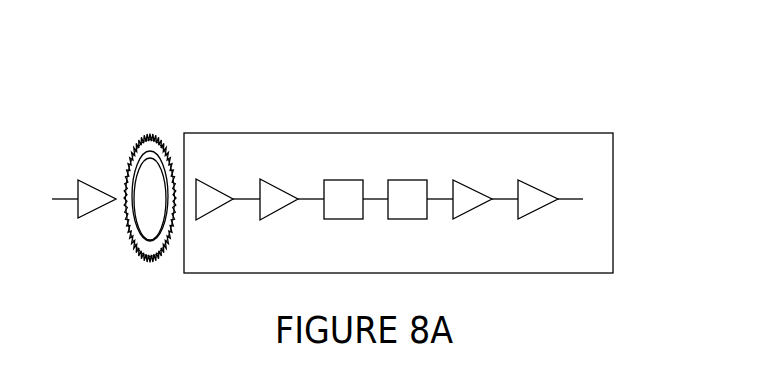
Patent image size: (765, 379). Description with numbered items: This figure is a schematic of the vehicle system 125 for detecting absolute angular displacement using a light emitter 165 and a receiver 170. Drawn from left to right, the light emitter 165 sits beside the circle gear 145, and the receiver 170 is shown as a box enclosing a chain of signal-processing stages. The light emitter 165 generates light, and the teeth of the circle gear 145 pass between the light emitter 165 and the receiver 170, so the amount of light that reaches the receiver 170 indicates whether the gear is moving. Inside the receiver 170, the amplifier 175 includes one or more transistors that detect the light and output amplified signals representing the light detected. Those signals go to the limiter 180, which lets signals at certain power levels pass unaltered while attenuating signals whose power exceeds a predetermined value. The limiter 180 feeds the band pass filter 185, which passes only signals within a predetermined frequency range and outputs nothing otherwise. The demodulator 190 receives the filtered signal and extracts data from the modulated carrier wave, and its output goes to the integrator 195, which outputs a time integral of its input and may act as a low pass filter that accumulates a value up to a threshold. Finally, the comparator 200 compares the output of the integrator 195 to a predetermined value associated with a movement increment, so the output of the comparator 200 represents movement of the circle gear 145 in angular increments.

The vehicle system 125 is at (288, 78).
The circle gear 145 is at (148, 136).
The light emitter 165 is at (98, 214).
The receiver 170 is at (613, 179).
The amplifier 175 is at (210, 182).
The limiter 180 is at (278, 214).
The band pass filter 185 is at (343, 179).
The demodulator 190 is at (405, 179).
The integrator 195 is at (472, 214).
The comparator 200 is at (530, 182).